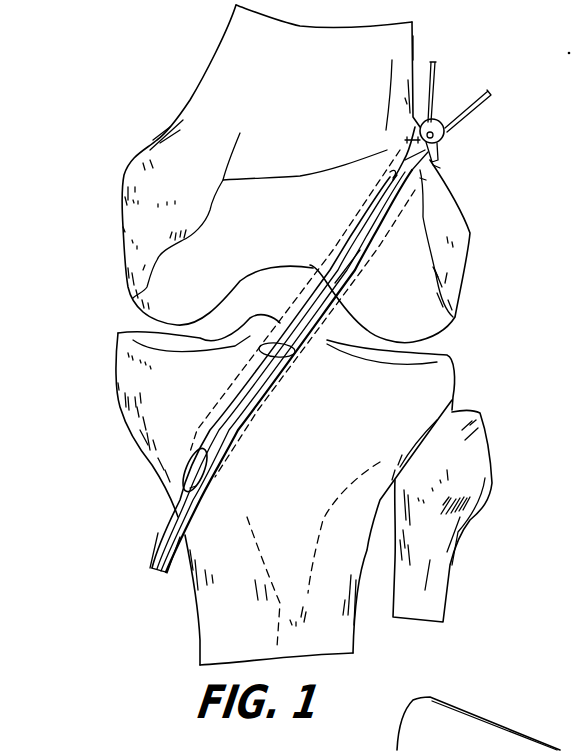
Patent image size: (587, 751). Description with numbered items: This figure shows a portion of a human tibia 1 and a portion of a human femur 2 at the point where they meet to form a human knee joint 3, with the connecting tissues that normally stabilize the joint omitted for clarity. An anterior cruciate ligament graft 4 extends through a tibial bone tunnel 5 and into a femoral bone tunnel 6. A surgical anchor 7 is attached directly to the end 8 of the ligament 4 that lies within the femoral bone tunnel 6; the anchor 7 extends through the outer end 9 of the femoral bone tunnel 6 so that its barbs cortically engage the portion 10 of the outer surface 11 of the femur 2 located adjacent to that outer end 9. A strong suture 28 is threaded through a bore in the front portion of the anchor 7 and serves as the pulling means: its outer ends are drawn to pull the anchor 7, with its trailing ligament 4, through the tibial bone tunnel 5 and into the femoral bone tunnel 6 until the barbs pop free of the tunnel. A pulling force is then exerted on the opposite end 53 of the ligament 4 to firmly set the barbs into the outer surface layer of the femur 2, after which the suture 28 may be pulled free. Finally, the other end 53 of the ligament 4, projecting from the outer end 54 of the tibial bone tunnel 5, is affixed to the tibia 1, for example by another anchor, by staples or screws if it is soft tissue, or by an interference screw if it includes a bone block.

The tibia 1 is at (140, 632).
The femur 2 is at (157, 54).
The knee joint 3 is at (94, 313).
The anterior cruciate ligament graft 4 is at (302, 283).
The tibial bone tunnel 5 is at (257, 403).
The femoral bone tunnel 6 is at (350, 260).
The surgical anchor 7 is at (456, 140).
The end of ligament 8 is at (379, 172).
The outer end of femoral bone tunnel 9 is at (423, 177).
The portion of outer surface 10 is at (438, 167).
The outer surface of femur 11 is at (413, 36).
The suture 28 is at (436, 65).
The opposite end of ligament 53 is at (153, 540).
The outer end of tibial bone tunnel 54 is at (213, 475).